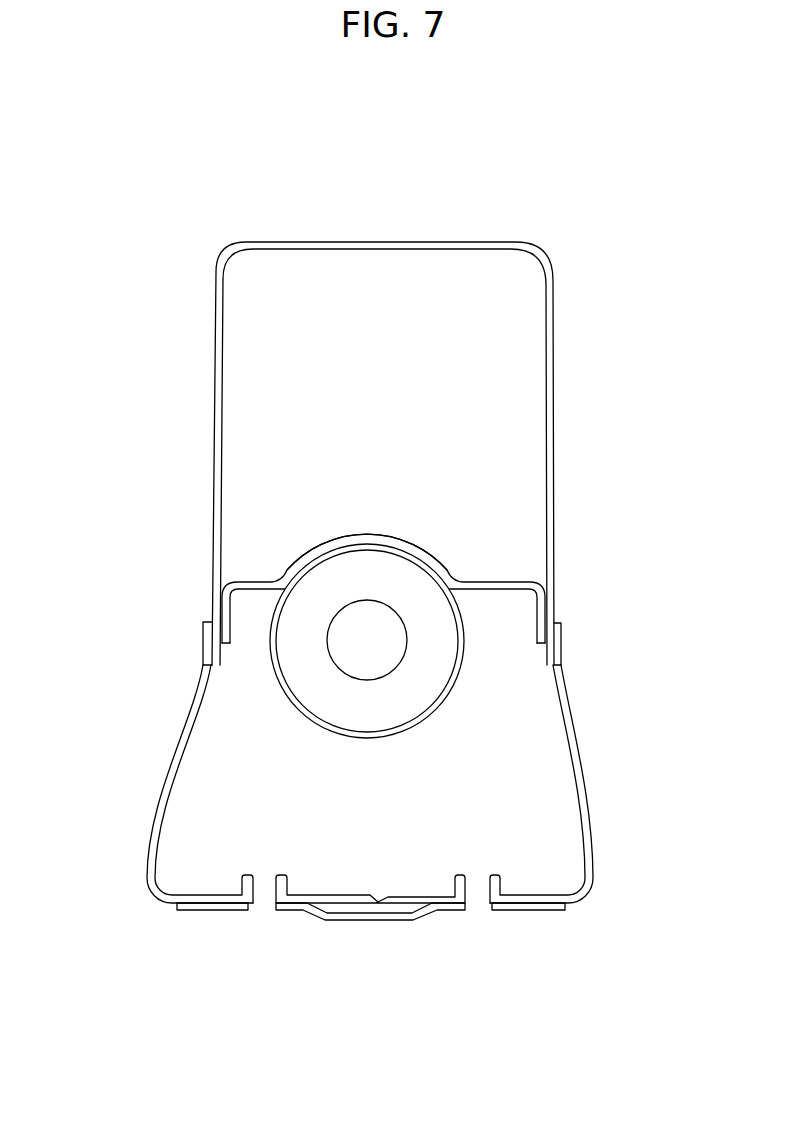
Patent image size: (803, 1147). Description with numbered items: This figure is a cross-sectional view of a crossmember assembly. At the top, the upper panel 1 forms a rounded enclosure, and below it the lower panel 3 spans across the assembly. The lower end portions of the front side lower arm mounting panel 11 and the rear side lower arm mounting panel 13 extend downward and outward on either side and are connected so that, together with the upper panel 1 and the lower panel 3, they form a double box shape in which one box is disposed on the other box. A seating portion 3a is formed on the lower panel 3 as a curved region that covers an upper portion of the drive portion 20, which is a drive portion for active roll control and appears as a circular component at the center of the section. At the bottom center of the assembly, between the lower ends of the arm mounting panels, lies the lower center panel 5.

The upper panel 1 is at (217, 311).
The lower panel 3 is at (497, 585).
The seating portion 3a is at (418, 540).
The lower center panel 5 is at (387, 921).
The front side lower arm mounting panel 11 is at (167, 762).
The rear side lower arm mounting panel 13 is at (582, 772).
The drive portion 20 is at (437, 667).